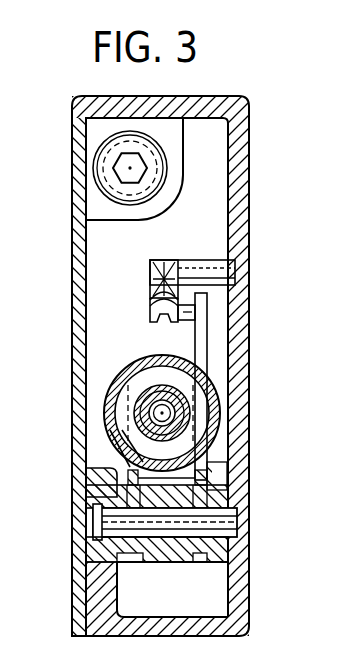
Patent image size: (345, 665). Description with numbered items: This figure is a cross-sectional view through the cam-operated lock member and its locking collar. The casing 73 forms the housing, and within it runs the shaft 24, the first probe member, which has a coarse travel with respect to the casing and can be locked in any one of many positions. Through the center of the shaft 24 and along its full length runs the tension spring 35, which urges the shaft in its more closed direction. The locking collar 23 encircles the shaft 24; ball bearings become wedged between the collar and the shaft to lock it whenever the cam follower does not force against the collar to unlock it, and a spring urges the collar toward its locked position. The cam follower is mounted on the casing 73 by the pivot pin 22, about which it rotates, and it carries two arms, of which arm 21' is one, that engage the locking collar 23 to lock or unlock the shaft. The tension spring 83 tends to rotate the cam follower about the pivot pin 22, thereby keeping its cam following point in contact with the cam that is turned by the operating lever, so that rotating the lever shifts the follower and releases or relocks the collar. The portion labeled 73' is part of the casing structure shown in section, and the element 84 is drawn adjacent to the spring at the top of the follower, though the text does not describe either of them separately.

The arm of cam follower 21' is at (137, 366).
The pivot pin 22 is at (110, 520).
The locking collar 23 is at (220, 406).
The shaft 24 is at (157, 392).
The tension spring 35 is at (177, 424).
The casing 73 is at (190, 599).
The end block wall 73' is at (67, 588).
The tension spring 83 is at (150, 283).
The adjusting screw 84 is at (212, 274).